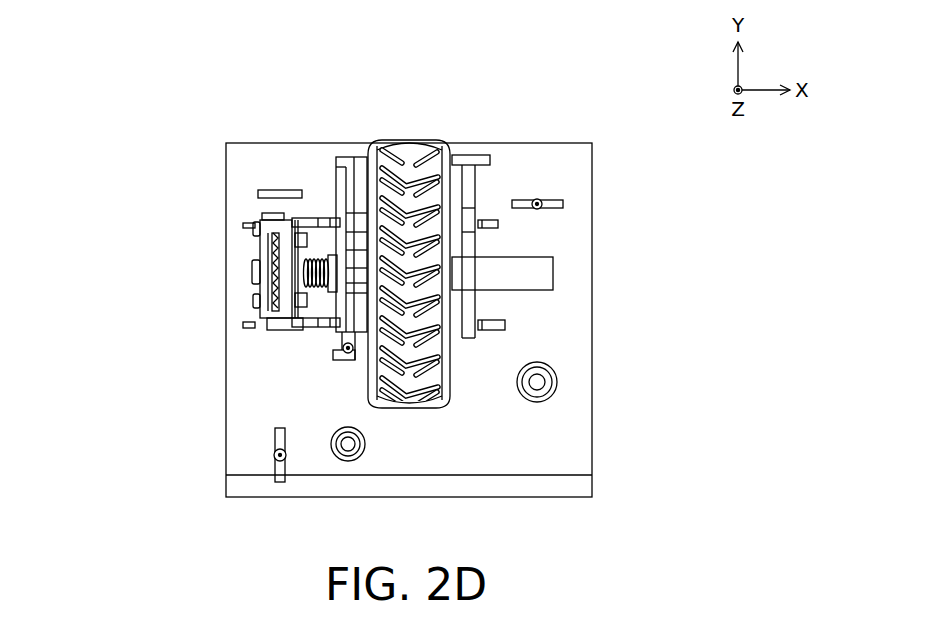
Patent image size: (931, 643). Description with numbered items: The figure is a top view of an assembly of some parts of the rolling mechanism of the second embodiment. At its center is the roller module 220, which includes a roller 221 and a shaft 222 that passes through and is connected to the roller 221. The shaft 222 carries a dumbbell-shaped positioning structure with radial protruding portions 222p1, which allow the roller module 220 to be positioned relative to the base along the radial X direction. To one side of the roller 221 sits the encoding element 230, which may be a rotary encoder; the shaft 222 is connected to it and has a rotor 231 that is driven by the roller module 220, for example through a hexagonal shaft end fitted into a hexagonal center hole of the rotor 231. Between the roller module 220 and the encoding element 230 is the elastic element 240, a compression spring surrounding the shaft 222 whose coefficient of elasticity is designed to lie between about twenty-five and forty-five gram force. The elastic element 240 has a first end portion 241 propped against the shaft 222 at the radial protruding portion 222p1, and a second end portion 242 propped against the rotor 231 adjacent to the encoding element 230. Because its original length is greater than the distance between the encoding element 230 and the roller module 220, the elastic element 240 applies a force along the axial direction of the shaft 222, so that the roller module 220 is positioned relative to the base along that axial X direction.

The roller module 220 is at (543, 252).
The roller 221 is at (442, 155).
The shaft 222 is at (512, 268).
The radial protruding portion 222p1 is at (337, 258).
The encoding element 230 is at (201, 276).
The rotor 231 is at (285, 243).
The elastic element 240 is at (201, 336).
The first end portion 241 is at (330, 310).
The second end portion 242 is at (312, 302).